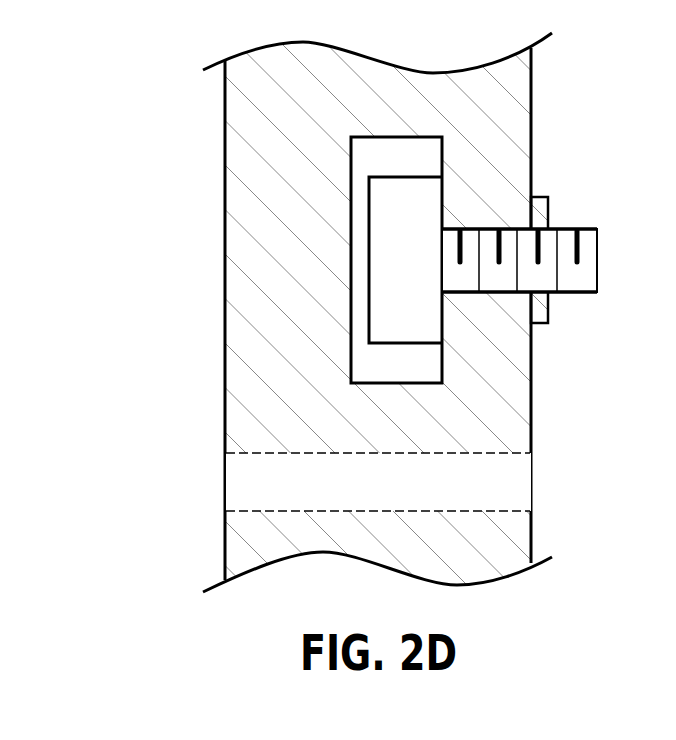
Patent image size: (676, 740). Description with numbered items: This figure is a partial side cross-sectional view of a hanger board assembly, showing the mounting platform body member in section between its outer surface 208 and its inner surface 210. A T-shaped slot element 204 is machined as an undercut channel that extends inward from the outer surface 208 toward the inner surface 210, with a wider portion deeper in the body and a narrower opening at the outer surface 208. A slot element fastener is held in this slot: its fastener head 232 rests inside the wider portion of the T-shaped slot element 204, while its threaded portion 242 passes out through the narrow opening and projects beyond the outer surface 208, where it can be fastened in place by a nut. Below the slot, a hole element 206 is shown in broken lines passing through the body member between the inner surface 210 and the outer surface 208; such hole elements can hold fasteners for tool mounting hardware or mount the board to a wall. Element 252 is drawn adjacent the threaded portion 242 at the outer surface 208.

The slot element 204 is at (423, 155).
The hole element 206 is at (405, 493).
The outer surface 208 is at (531, 423).
The inner surface 210 is at (225, 218).
The fastener head 232 is at (417, 207).
The threaded portion 242 is at (592, 262).
The flange 252 is at (548, 323).